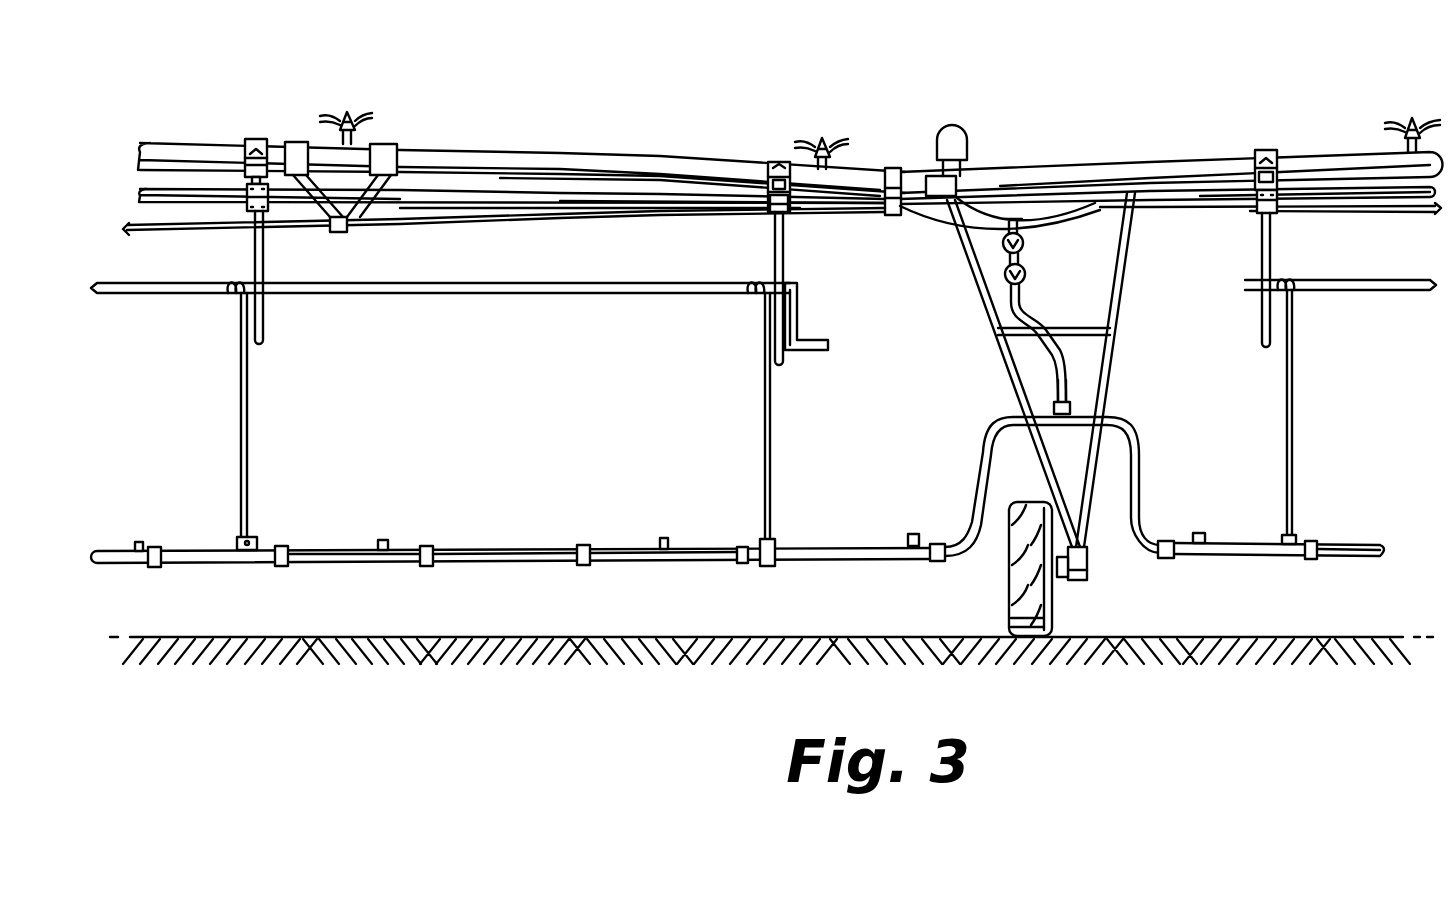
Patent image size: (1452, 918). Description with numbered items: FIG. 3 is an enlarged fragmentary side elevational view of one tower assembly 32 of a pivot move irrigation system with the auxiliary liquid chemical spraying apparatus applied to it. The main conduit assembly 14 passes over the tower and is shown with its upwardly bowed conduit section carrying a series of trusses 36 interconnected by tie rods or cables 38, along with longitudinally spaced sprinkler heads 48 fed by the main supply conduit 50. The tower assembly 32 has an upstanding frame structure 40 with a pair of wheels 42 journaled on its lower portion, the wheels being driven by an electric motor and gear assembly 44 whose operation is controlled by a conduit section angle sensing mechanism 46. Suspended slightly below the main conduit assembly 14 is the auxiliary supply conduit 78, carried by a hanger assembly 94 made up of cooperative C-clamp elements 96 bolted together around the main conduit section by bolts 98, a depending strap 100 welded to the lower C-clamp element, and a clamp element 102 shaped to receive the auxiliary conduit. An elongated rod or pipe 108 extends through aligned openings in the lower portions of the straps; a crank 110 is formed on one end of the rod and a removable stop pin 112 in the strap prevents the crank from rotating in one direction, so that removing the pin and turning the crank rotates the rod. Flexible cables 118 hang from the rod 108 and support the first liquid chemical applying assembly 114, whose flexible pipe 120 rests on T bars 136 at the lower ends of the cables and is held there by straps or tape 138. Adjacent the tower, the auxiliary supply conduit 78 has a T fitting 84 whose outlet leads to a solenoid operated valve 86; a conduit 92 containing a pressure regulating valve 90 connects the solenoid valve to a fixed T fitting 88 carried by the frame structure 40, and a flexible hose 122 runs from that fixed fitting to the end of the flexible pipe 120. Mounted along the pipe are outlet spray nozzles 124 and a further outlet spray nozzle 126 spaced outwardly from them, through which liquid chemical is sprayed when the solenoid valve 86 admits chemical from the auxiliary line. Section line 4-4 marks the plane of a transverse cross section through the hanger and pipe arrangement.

The conduit assembly 14 is at (655, 157).
The tower assembly 32 is at (1029, 641).
The truss 36 is at (370, 220).
The tie rods or cables 38 is at (550, 217).
The frame structure 40 is at (1020, 399).
The wheels 42 is at (1020, 590).
The electric motor and gear assembly 44 is at (1085, 568).
The conduit section angle sensing mechanism 46 is at (967, 125).
The sprinkler heads 48 is at (358, 118).
The supply conduit 50 is at (497, 190).
The auxiliary supply conduit 78 is at (650, 202).
The T fitting 84 is at (1025, 220).
The solenoid operated valve 86 is at (1027, 255).
The fixed T fitting 88 is at (1062, 418).
The pressure regulating valve 90 is at (1005, 275).
The conduit 92 is at (1068, 363).
The hanger assembly 94 is at (265, 258).
The C-clamp elements 96 is at (256, 139).
The bolts 98 is at (770, 210).
The depending strap 100 is at (265, 318).
The clamp element 102 is at (245, 205).
The rod or pipe 108 is at (480, 294).
The crank 110 is at (824, 350).
The stop pin 112 is at (799, 326).
The first liquid chemical applying assembly 114 is at (576, 561).
The flexible cables 118 is at (248, 422).
The flexible pipe 120 is at (452, 549).
The flexible hose 122 is at (986, 473).
The outlet spray nozzles 124 is at (383, 540).
The outlet spray nozzle 126 is at (140, 542).
The T bars 136 is at (360, 563).
The straps or tape 138 is at (285, 546).
The section line 4- 4 is at (235, 95).